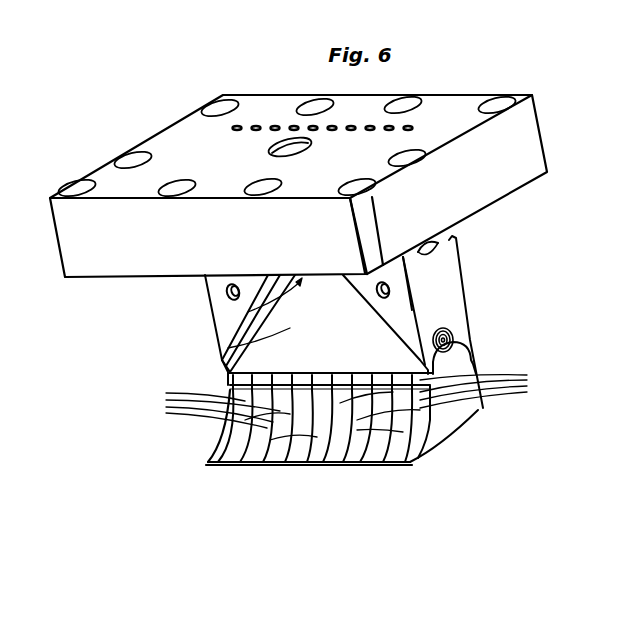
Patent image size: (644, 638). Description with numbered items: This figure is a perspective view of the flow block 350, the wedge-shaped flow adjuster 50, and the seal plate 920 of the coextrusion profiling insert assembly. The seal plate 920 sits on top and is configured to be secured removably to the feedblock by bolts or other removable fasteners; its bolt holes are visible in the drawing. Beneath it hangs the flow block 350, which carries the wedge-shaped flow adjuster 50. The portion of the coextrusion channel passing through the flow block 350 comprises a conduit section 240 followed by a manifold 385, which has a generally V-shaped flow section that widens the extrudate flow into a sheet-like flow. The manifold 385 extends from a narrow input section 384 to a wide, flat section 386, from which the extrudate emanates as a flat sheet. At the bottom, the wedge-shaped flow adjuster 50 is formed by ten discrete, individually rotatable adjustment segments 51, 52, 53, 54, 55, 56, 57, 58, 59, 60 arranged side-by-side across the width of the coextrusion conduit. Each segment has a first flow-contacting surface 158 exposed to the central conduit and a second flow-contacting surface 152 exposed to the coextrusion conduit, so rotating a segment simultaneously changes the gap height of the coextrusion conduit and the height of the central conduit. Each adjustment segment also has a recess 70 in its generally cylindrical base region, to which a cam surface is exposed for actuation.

The seal plate 920 is at (540, 143).
The conduit section 240 is at (427, 250).
The flow block 350 is at (453, 290).
The narrow input section 384 is at (248, 310).
The manifold 385 is at (225, 360).
The wide, flat section 386 is at (423, 328).
The recess 70 is at (473, 363).
The wedge-shaped flow adjuster 50 is at (463, 431).
The second flow-contacting surface 152 is at (346, 405).
The first flow-contacting surface 158 is at (433, 452).
The adjustment segment 51 is at (218, 463).
The adjustment segment 52 is at (240, 463).
The adjustment segment 53 is at (263, 463).
The adjustment segment 54 is at (285, 463).
The adjustment segment 55 is at (307, 463).
The adjustment segment 56 is at (323, 462).
The adjustment segment 57 is at (343, 463).
The adjustment segment 58 is at (360, 463).
The adjustment segment 59 is at (383, 463).
The adjustment segment 60 is at (405, 463).